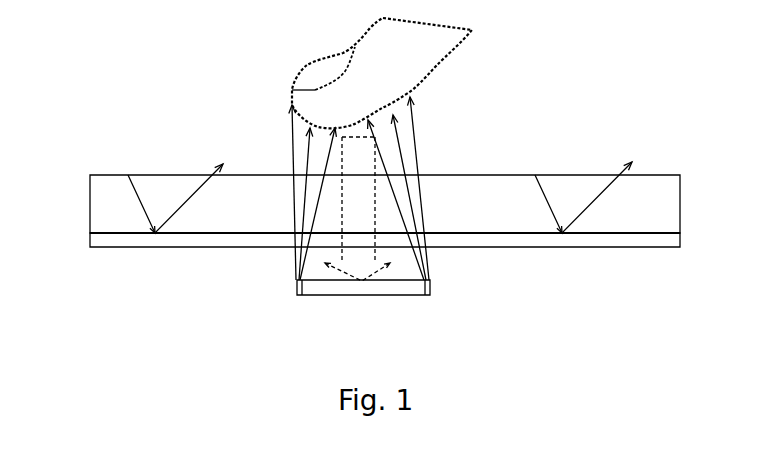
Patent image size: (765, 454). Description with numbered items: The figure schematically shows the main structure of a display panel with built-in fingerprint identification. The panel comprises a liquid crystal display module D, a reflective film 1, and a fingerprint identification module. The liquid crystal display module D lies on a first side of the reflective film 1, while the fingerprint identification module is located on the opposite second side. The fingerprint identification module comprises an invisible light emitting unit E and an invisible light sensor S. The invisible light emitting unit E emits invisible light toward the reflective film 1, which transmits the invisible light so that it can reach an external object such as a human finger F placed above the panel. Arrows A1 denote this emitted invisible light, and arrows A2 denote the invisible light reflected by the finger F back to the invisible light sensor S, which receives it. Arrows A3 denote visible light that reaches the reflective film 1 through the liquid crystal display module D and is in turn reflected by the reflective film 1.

The liquid crystal display module D is at (105, 190).
The reflective film 1 is at (105, 237).
The human finger F is at (382, 73).
The invisible light sensor S is at (367, 290).
The invisible light emitting unit E is at (297, 288).
The emitted invisible light arrow A1 is at (349, 188).
The reflected invisible light arrow A2 is at (357, 209).
The visible light arrow A3 is at (380, 197).